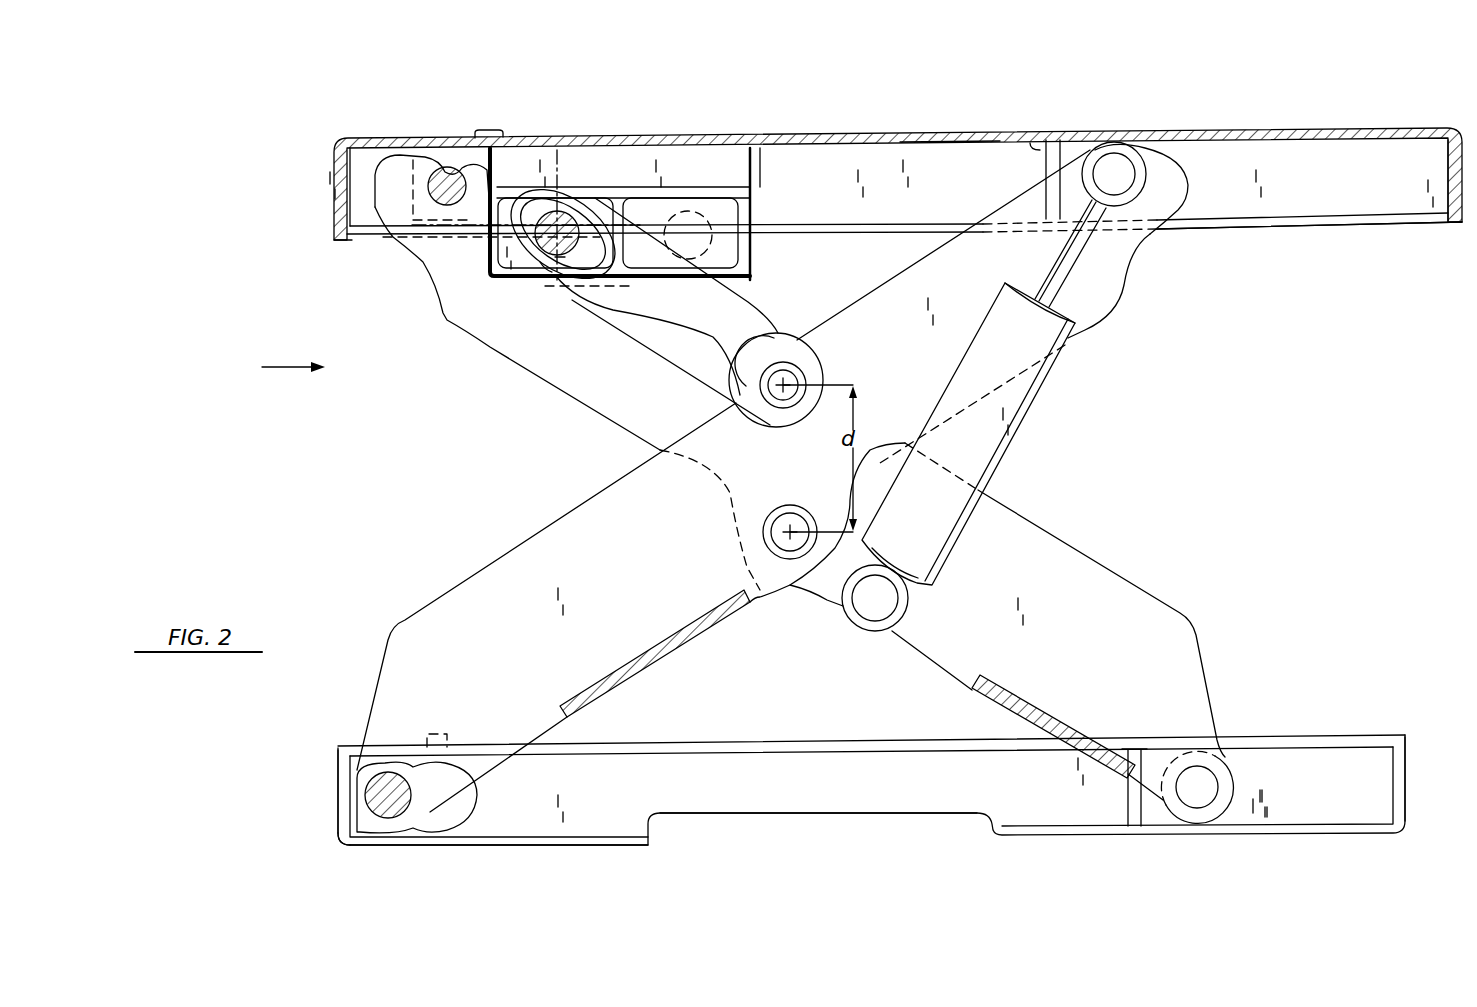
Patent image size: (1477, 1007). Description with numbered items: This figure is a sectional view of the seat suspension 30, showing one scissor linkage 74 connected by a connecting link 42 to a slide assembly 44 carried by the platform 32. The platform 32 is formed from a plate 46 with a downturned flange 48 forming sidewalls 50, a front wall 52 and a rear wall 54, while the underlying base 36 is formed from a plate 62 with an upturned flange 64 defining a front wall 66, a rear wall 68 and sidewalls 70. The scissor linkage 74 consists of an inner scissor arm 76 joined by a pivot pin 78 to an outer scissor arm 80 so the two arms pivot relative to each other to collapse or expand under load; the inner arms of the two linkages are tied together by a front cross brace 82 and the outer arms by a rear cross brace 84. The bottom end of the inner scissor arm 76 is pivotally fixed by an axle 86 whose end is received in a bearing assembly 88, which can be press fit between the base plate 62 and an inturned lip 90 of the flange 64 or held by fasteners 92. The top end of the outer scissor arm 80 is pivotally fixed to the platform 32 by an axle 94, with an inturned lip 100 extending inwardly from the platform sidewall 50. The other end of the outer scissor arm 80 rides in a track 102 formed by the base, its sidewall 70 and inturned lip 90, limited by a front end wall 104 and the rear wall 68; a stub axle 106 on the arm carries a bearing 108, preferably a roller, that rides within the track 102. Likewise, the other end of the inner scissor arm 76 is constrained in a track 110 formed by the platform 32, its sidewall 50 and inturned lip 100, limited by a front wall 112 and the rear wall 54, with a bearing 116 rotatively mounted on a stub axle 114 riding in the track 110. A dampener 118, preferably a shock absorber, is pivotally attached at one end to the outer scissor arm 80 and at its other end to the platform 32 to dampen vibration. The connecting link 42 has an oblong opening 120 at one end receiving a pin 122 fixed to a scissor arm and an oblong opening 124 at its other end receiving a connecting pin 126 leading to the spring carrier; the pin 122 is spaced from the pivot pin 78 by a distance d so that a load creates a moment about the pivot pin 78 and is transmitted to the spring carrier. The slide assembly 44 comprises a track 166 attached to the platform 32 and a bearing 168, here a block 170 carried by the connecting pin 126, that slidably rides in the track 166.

The seat suspension 30 is at (274, 366).
The platform 32 is at (1318, 122).
The base 36 is at (940, 820).
The connecting link 42 is at (658, 314).
The slide assembly 44 is at (774, 176).
The plate 46 is at (946, 134).
The downturned flange 48 is at (336, 230).
The sidewalls 50 is at (893, 182).
The front wall 52 is at (340, 201).
The rear wall 54 is at (1450, 210).
The plate 62 is at (585, 845).
The upturned flange 64 is at (720, 814).
The front wall 66 is at (336, 780).
The rear wall 68 is at (1407, 768).
The sidewalls 70 is at (988, 790).
The scissor linkage 74 is at (1234, 634).
The inner scissor arm 76 is at (622, 600).
The pivot pin 78 is at (790, 560).
The outer scissor arm 80 is at (1107, 647).
The front cross brace 82 is at (662, 648).
The rear cross brace 84 is at (977, 681).
The axle 86 is at (348, 833).
The bearing assembly 88 is at (455, 798).
The inturned lip 90 is at (1298, 736).
The fasteners 92 is at (440, 740).
The axle 94 is at (448, 168).
The inturned lip 100 is at (1335, 222).
The track 102 is at (1365, 757).
The front end wall 104 is at (1126, 814).
The stub axle 106 is at (1197, 800).
The bearing 108 is at (1217, 817).
The track 110 is at (1383, 150).
The front wall 112 is at (1030, 140).
The stub axle 114 is at (1113, 165).
The bearing 116 is at (1142, 150).
The dampener 118 is at (1012, 402).
The oblong opening 120 is at (753, 350).
The pin 122 is at (783, 380).
The oblong opening 124 is at (573, 250).
The connecting pin 126 is at (545, 267).
The track 166 is at (688, 185).
The bearing 168 is at (512, 200).
The block 170 is at (603, 200).